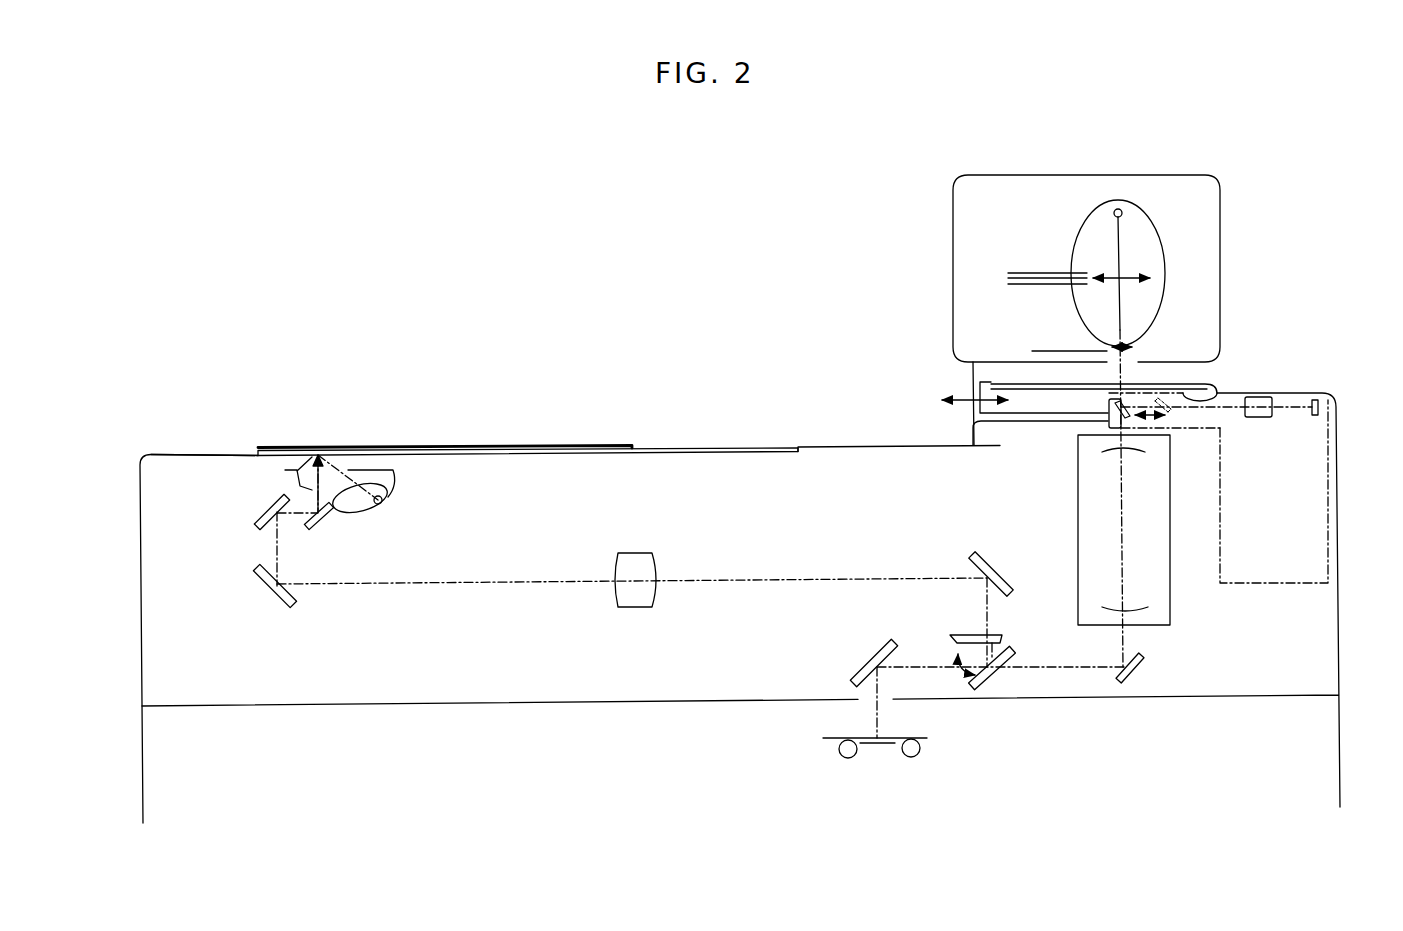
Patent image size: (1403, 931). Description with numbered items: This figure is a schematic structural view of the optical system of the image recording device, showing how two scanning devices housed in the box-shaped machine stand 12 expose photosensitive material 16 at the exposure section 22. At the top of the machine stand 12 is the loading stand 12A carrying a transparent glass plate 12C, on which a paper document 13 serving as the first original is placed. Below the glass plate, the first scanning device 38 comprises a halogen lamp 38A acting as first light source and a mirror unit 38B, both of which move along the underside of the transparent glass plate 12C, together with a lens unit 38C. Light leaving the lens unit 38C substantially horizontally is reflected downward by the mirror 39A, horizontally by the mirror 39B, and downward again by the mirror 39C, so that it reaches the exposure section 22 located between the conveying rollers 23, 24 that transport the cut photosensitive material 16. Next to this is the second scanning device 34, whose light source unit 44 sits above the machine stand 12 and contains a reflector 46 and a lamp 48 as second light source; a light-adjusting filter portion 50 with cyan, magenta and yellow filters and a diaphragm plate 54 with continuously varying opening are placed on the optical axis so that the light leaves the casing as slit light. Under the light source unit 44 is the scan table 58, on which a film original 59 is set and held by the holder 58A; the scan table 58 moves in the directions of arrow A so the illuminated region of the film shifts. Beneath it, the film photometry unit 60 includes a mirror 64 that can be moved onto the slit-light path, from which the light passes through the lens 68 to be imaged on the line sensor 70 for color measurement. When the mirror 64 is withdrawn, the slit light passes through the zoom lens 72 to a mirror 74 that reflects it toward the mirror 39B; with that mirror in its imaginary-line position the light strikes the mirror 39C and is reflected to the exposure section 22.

The machine stand 12 is at (142, 628).
The loading stand 12A is at (213, 453).
The transparent glass plate 12C is at (710, 455).
The paper document 13 is at (519, 447).
The photosensitive material 16 is at (927, 735).
The exposure section 22 is at (920, 733).
The conveying roller 23 is at (915, 758).
The conveying roller 24 is at (851, 760).
The second scanning device 34 is at (872, 337).
The first scanning device 38 is at (560, 536).
The halogen lamp 38A is at (385, 505).
The mirror unit 38B is at (248, 545).
The lens unit 38C is at (625, 607).
The mirror 39A is at (1000, 570).
The mirror 39B is at (993, 673).
The mirror 39C is at (868, 656).
The light source unit 44 is at (938, 237).
The reflector 46 is at (1080, 230).
The lamp 48 is at (1123, 212).
The light-adjusting filter portion 50 is at (1006, 266).
The diaphragm plate 54 is at (1050, 351).
The scan table 58 is at (985, 383).
The holder 58A is at (1180, 382).
The film original 59 is at (1217, 390).
The film photometry unit 60 is at (1300, 583).
The mirror 64 is at (1108, 406).
The lens 68 is at (1265, 397).
The line sensor 70 is at (1318, 400).
The zoom lens 72 is at (1170, 610).
The mirror 74 is at (1140, 672).
The arrow A is at (956, 419).